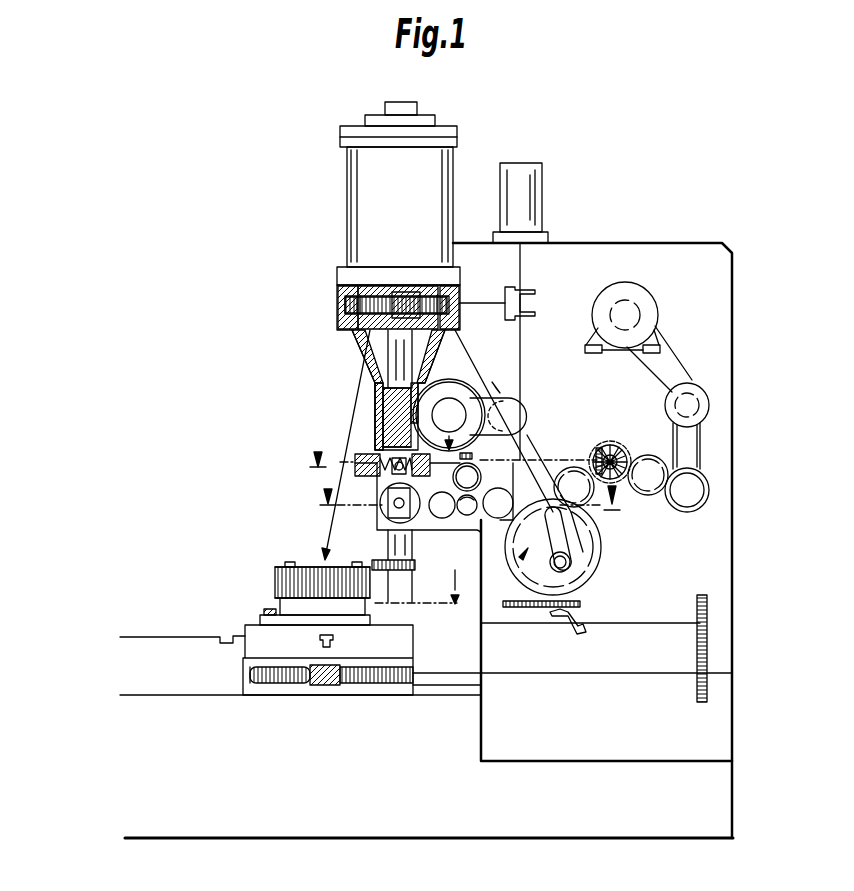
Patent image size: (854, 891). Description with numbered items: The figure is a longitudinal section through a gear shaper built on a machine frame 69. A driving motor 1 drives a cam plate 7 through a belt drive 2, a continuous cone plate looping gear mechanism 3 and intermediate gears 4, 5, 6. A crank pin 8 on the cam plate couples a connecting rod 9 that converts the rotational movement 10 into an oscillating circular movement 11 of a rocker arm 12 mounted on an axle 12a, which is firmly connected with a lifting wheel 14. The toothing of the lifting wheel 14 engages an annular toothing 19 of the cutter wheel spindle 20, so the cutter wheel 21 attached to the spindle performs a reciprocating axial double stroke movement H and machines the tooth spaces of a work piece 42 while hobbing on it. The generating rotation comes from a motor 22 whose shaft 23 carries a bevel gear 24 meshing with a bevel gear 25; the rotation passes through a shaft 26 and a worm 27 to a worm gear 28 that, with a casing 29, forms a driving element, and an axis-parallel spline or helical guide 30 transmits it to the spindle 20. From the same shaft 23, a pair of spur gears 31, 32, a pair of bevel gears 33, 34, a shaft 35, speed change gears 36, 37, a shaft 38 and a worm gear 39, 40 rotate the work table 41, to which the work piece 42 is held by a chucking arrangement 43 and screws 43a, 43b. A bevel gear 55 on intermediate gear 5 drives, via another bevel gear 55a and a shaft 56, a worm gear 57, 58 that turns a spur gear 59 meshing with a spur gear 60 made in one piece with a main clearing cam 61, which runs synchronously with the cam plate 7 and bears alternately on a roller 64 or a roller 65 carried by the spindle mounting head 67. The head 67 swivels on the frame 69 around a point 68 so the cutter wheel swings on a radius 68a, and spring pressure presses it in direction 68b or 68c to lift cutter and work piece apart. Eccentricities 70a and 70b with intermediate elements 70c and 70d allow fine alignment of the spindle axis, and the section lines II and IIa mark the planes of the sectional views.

The driving motor 1 is at (645, 318).
The belt drive 2 is at (670, 368).
The continuous cone plate looping gear mechanism 3 is at (692, 448).
The intermediate gear 4 is at (653, 492).
The intermediate gear 5 is at (625, 447).
The intermediate gear 6 is at (565, 470).
The cam plate 7 is at (590, 555).
The crank pin 8 is at (566, 566).
The connecting rod 9 is at (567, 543).
The rotational movement 10 is at (523, 557).
The oscillating circular movement 11 is at (505, 392).
The rocker arm 12 is at (528, 413).
The axle 12a is at (449, 398).
The lifting wheel 14 is at (473, 385).
The annular toothing 19 is at (390, 403).
The cutter wheel spindle 20 is at (405, 583).
The cutter wheel 21 is at (391, 550).
The motor 22 is at (521, 165).
The shaft 23 is at (520, 263).
The bevel gear 24 is at (518, 307).
The bevel gear 25 is at (513, 287).
The shaft 26 is at (478, 302).
The worm 27 is at (410, 297).
The worm gear 28 is at (358, 287).
The casing 29 is at (347, 315).
The helical guide 30 is at (443, 337).
The spur gear 31 is at (513, 608).
The spur gear 32 is at (580, 604).
The bevel gear 33 is at (555, 617).
The bevel gear 34 is at (578, 630).
The shaft 35 is at (648, 625).
The speed change gear 36 is at (707, 623).
The speed change gear 37 is at (707, 675).
The shaft 38 is at (670, 675).
The worm gear 39 is at (333, 670).
The worm gear 40 is at (293, 670).
The work table 41 is at (263, 653).
The work piece 42 is at (283, 582).
The chucking arrangement 43 is at (252, 630).
The screw 43a is at (290, 563).
The screw 43b is at (266, 612).
The bevel gear 55 is at (622, 485).
The bevel gear 55a is at (610, 443).
The shaft 56 is at (583, 462).
The worm gear 57 is at (498, 432).
The worm gear 58 is at (476, 522).
The spur gear 59 is at (482, 477).
The spur gear 60 is at (478, 560).
The main clearing cam 61 is at (467, 507).
The roller 64 is at (510, 500).
The roller 65 is at (440, 512).
The spindle mounting head 67 is at (382, 415).
The swivel point 68 is at (395, 320).
The radius 68a is at (377, 440).
The direction 68b is at (455, 603).
The direction 68c is at (322, 556).
The machine frame 69 is at (630, 243).
The eccentricity 70a is at (397, 503).
The eccentricity 70b is at (340, 452).
The intermediate element 70c is at (372, 518).
The intermediate element 70d is at (355, 485).
The reciprocating axial double stroke movement H is at (418, 585).
The section line II is at (463, 507).
The section line IIa is at (453, 477).